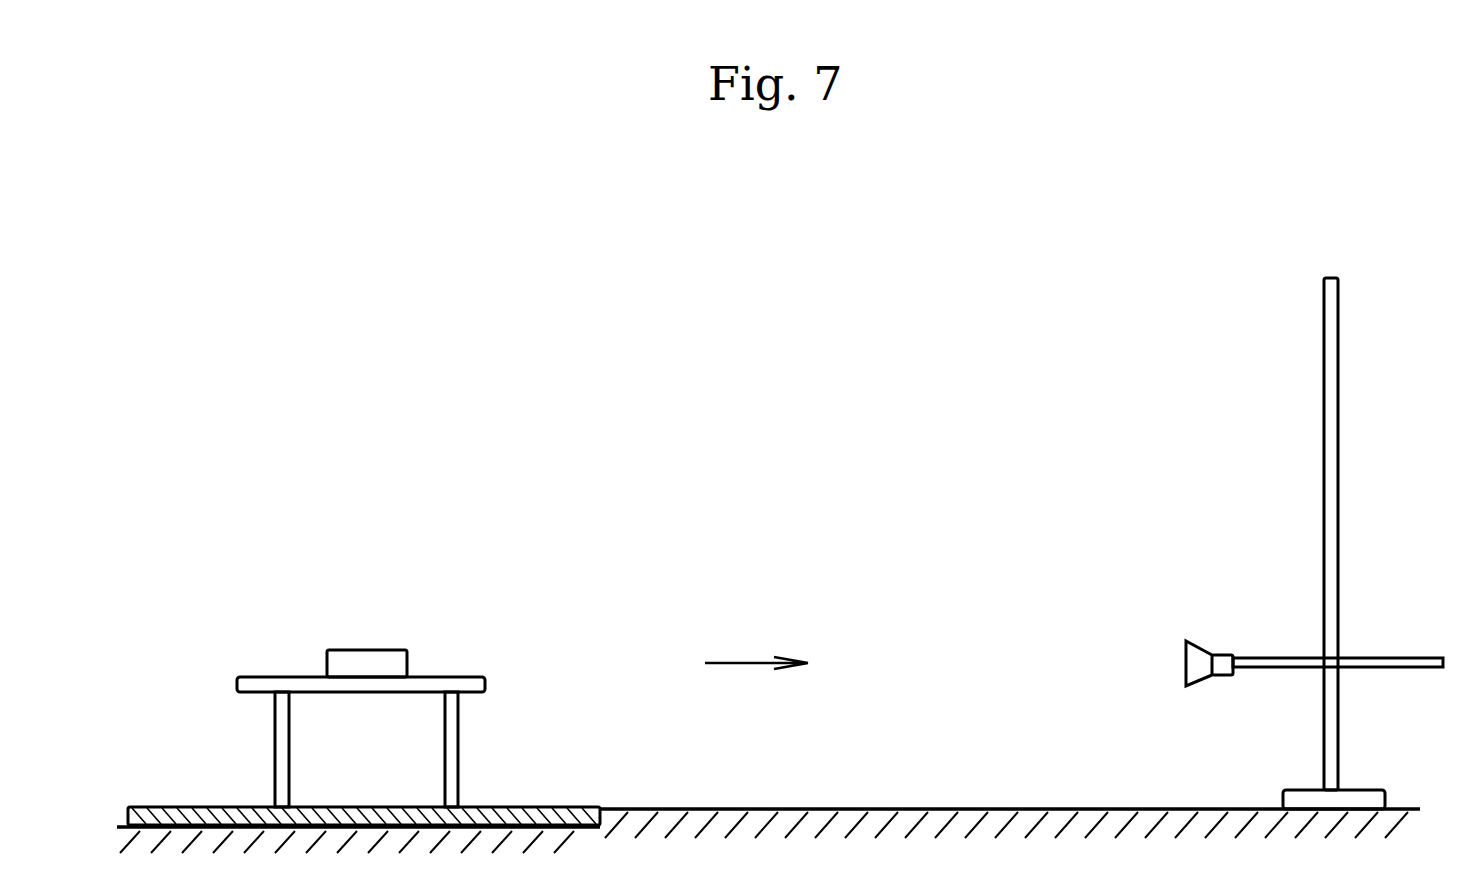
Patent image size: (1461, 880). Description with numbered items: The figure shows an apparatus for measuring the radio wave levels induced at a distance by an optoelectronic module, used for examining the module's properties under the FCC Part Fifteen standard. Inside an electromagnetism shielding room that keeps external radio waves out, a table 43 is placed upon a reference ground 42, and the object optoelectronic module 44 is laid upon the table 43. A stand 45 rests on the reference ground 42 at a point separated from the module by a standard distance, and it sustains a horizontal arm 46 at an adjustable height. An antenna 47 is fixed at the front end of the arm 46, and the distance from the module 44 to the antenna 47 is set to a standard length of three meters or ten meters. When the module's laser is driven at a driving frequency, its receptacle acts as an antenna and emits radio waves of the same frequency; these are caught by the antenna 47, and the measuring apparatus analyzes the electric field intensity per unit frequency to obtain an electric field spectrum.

The reference ground 42 is at (758, 809).
The table 43 is at (454, 768).
The object optoelectronic module 44 is at (373, 668).
The stand 45 is at (1340, 776).
The horizontal arm 46 is at (1398, 660).
The antenna 47 is at (1200, 660).